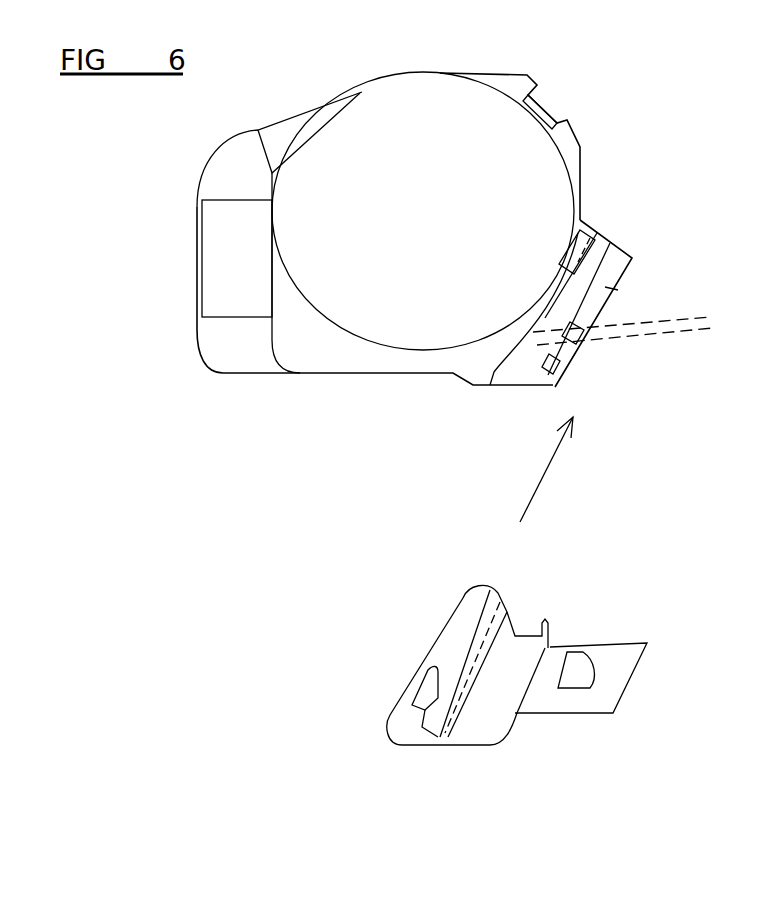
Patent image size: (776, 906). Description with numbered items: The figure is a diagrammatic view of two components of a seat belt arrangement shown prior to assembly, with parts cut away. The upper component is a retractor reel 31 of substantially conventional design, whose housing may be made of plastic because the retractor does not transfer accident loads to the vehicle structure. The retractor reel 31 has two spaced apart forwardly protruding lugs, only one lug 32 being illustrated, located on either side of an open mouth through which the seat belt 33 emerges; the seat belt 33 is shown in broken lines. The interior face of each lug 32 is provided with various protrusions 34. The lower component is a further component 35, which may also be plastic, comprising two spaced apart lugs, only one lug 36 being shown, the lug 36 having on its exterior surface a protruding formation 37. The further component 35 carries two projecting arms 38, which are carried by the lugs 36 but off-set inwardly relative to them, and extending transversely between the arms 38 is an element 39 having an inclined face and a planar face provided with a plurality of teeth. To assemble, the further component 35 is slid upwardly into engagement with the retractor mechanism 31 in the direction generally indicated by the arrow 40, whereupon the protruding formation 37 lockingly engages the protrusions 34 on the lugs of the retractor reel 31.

The retractor reel 31 is at (394, 102).
The lug 32 is at (614, 248).
The seat belt 33 is at (668, 317).
The protrusions 34 is at (605, 287).
The further component 35 is at (491, 686).
The lug 36 is at (386, 720).
The protruding formation 37 is at (465, 657).
The projecting arms 38 is at (615, 667).
The element 39 is at (576, 667).
The arrow 40 is at (540, 478).